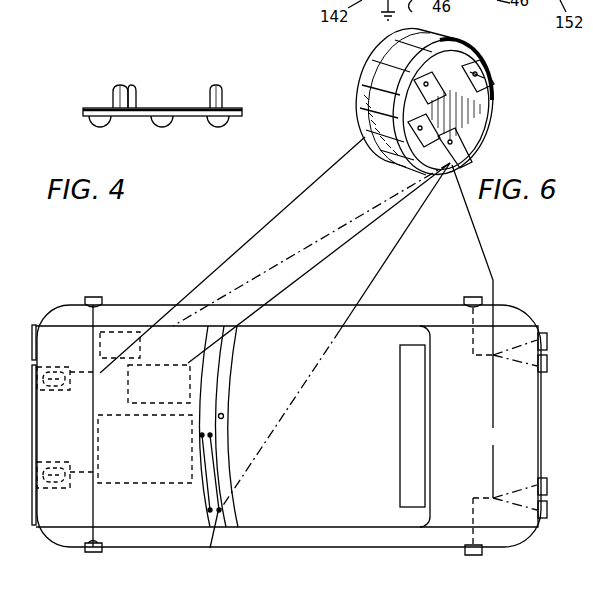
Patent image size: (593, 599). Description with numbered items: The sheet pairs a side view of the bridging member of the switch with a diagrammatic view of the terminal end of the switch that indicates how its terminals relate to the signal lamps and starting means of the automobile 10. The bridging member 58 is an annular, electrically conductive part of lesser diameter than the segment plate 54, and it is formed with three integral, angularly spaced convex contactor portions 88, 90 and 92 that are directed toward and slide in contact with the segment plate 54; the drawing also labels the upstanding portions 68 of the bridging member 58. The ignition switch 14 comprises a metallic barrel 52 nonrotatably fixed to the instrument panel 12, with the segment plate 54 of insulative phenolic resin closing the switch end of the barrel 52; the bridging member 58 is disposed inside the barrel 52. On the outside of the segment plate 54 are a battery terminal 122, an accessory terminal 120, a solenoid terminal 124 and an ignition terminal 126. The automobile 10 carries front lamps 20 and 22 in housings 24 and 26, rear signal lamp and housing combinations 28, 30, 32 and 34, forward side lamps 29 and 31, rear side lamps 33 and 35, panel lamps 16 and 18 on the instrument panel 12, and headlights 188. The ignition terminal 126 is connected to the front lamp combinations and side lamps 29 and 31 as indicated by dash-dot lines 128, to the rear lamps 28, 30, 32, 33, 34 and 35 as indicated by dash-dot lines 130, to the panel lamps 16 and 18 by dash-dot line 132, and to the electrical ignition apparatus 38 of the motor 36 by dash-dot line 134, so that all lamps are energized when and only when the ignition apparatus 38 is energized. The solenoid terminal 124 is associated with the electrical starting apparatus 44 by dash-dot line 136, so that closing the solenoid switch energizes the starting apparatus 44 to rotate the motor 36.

In FIG. 6, the automobile 10 is at (532, 308).
In FIG. 6, the instrument panel 12 is at (216, 383).
In FIG. 6, the ignition switch 14 is at (222, 418).
In FIG. 6, the panel lamp 16 is at (212, 436).
In FIG. 6, the panel lamp 18 is at (210, 548).
In FIG. 6, the front lamp 20 is at (65, 400).
In FIG. 6, the front lamp 22 is at (60, 462).
In FIG. 6, the housing 24 is at (53, 367).
In FIG. 6, the housing 26 is at (55, 488).
In FIG. 6, the rear signal lamp and housing combination 28 is at (547, 340).
In FIG. 6, the forward side lamp 29 is at (96, 556).
In FIG. 6, the rear signal lamp and housing combination 30 is at (547, 362).
In FIG. 6, the forward side lamp 31 is at (93, 297).
In FIG. 6, the rear signal lamp and housing combination 32 is at (547, 485).
In FIG. 6, the rear side lamp 33 is at (476, 557).
In FIG. 6, the rear signal lamp and housing combination 34 is at (547, 508).
In FIG. 6, the rear side lamp 35 is at (473, 297).
In FIG. 6, the motor 36 is at (126, 483).
In FIG. 6, the electrical ignition apparatus 38 is at (162, 364).
In FIG. 6, the electrical starting apparatus 44 is at (120, 330).
In FIG. 6, the metallic barrel 52 is at (362, 107).
In FIG. 6, the segment plate 54 is at (484, 116).
In FIG. 4, the bridging member 58 is at (243, 110).
In FIG. 4, the terminal pins 68 is at (216, 85).
In FIG. 4, the contactor portion 88 is at (165, 128).
In FIG. 4, the contactor portion 90 is at (100, 127).
In FIG. 4, the contactor portion 92 is at (219, 128).
In FIG. 6, the accessory terminal 120 is at (484, 84).
In FIG. 6, the battery terminal 122 is at (410, 160).
In FIG. 6, the solenoid terminal 124 is at (462, 56).
In FIG. 6, the ignition terminal 126 is at (472, 156).
In FIG. 6, the dash-dot lines 128 is at (290, 256).
In FIG. 6, the dash-dot lines 130 is at (487, 255).
In FIG. 6, the dash-dot line 132 is at (387, 262).
In FIG. 6, the dash-dot line 134 is at (310, 267).
In FIG. 6, the dash-dot line 136 is at (246, 236).
In FIG. 6, the headlights 188 is at (33, 325).